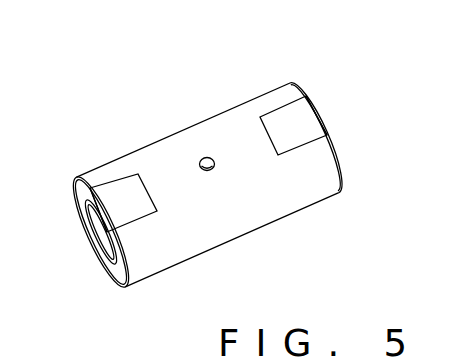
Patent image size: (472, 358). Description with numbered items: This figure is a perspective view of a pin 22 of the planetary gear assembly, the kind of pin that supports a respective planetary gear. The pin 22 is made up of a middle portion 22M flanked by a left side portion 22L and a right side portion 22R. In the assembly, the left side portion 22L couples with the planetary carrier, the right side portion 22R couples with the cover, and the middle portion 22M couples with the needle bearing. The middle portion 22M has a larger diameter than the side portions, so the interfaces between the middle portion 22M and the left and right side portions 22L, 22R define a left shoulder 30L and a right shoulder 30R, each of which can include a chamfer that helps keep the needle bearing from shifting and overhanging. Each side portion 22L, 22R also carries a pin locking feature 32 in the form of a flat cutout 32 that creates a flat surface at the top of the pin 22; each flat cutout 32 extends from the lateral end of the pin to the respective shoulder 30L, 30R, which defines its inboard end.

The pin 22 is at (178, 113).
The left side portion 22L is at (140, 281).
The middle portion 22M is at (240, 237).
The right side portion 22R is at (337, 195).
The left shoulder 30L is at (143, 194).
The right shoulder 30R is at (272, 137).
The pin locking feature 32 is at (97, 194).